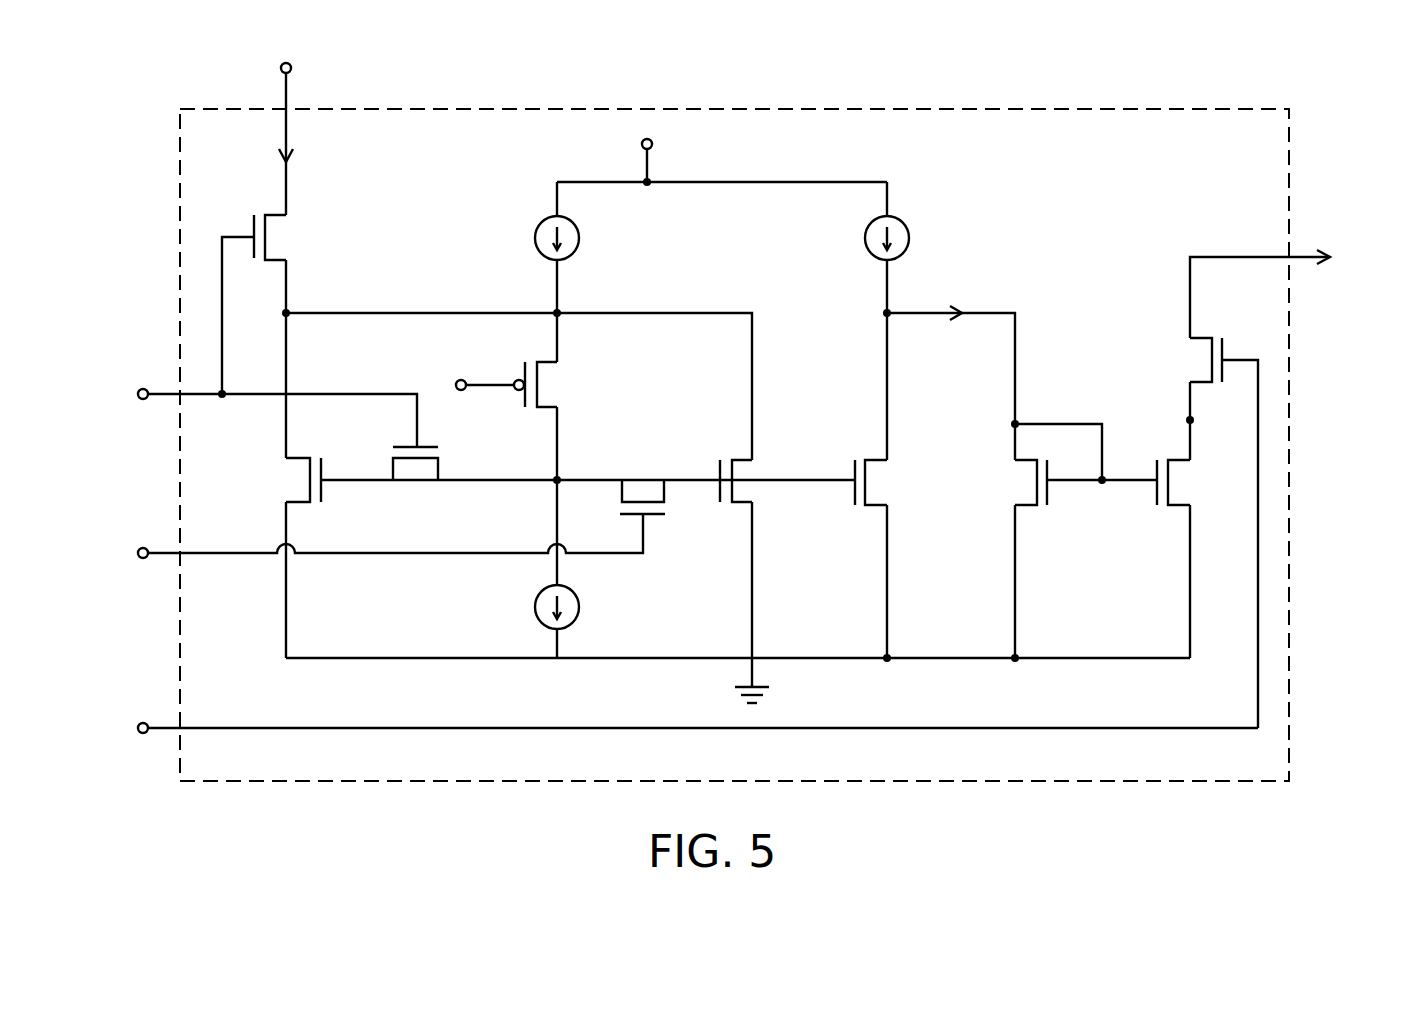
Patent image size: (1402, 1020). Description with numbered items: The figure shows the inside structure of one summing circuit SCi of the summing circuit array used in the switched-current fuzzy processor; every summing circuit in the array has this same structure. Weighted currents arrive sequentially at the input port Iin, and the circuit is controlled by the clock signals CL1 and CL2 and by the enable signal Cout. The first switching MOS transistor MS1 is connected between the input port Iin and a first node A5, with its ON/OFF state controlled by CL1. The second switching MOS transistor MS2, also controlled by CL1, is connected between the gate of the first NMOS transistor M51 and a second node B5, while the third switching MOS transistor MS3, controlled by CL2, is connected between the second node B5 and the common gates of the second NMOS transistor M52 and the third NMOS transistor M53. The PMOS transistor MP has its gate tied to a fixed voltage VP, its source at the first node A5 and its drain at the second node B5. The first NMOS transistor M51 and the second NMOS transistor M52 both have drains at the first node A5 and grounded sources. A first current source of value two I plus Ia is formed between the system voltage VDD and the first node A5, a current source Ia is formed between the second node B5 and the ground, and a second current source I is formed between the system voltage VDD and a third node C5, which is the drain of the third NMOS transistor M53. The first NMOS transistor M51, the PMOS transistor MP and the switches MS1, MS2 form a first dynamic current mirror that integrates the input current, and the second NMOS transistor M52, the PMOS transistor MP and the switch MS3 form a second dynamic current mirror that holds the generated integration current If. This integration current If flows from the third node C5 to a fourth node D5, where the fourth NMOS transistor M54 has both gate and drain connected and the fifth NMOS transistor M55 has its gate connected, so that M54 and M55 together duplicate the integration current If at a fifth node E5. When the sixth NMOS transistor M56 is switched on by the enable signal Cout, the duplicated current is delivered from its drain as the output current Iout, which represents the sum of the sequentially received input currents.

The summing circuit SCi is at (734, 445).
The input port Iin is at (265, 134).
The first switching MOS transistor MS1 is at (287, 304).
The first node A5 is at (498, 378).
The first clock signal CL1 is at (245, 412).
The first NMOS transistor M51 is at (276, 480).
The second switching MOS transistor MS2 is at (421, 486).
The second node B5 is at (539, 496).
The second clock signal CL2 is at (358, 542).
The third switching MOS transistor MS3 is at (646, 474).
The system voltage VDD is at (722, 160).
The fixed voltage VP is at (480, 365).
The PMOS transistor MP is at (555, 384).
The second current source Ia is at (583, 621).
The second NMOS transistor M52 is at (767, 466).
The second current source I is at (903, 321).
The third node C5 is at (930, 378).
The integration current If is at (959, 294).
The third NMOS transistor M53 is at (902, 559).
The fourth NMOS transistor M54 is at (1062, 559).
The fourth node D5 is at (1067, 473).
The fifth NMOS transistor M55 is at (1203, 559).
The fifth node E5 is at (1212, 421).
The sixth NMOS transistor M56 is at (1198, 533).
The output current Iout is at (1282, 294).
The enable signal Cout is at (668, 728).